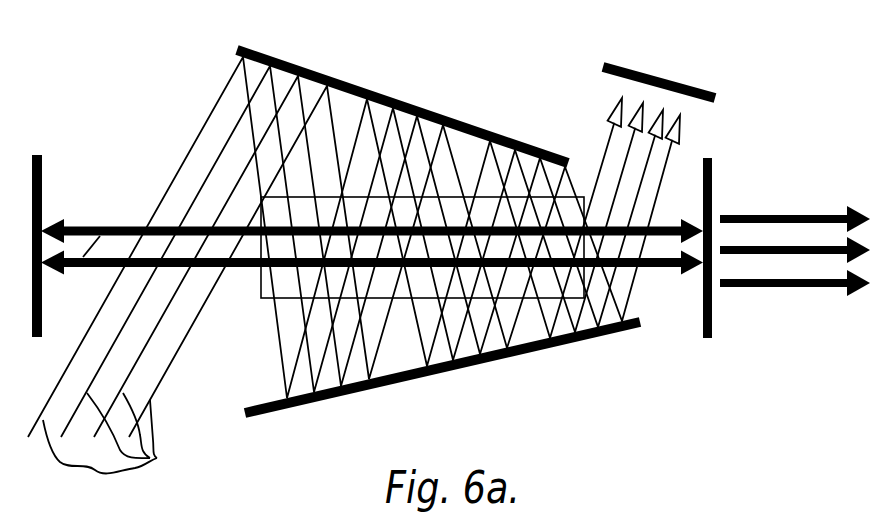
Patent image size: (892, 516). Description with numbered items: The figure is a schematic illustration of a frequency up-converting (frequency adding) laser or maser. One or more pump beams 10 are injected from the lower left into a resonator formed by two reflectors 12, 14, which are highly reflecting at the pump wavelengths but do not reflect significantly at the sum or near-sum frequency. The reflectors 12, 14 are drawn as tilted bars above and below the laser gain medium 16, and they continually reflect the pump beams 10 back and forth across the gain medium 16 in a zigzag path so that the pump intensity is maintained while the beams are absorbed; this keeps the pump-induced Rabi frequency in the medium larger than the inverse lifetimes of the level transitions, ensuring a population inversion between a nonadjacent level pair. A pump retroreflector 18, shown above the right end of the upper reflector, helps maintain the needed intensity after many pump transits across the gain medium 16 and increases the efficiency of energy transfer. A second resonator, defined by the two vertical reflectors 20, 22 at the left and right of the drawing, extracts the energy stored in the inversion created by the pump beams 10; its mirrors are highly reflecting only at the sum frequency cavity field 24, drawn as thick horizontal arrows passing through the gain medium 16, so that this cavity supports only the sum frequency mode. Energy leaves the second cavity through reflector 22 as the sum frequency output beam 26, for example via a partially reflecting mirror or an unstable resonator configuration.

The pump beams 10 is at (157, 458).
The reflector 12 is at (368, 96).
The reflector 14 is at (550, 345).
The laser gain medium 16 is at (261, 298).
The pump retroreflector 18 is at (657, 72).
The reflector 20 is at (42, 169).
The reflector 22 is at (712, 312).
The sum frequency cavity field 24 is at (100, 226).
The sum frequency output beam 26 is at (767, 282).